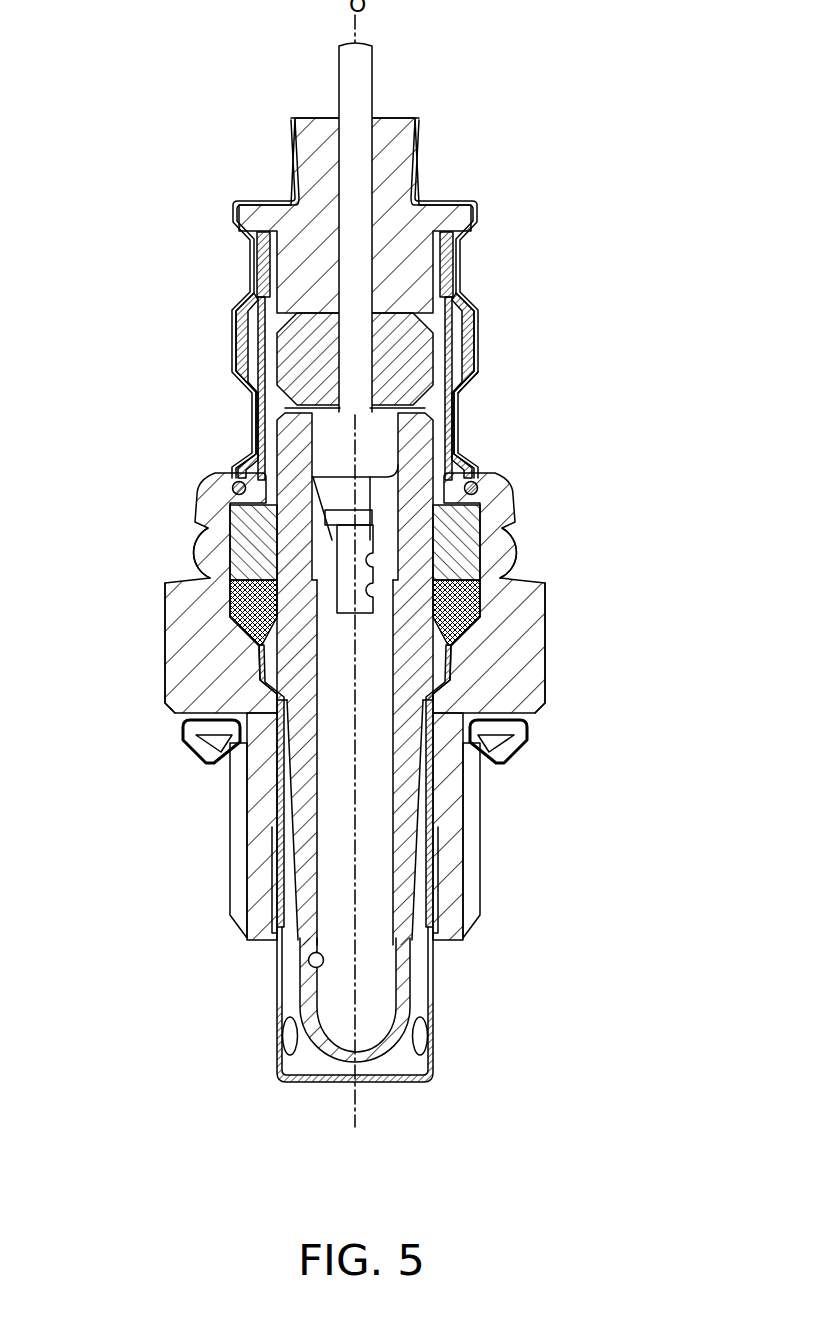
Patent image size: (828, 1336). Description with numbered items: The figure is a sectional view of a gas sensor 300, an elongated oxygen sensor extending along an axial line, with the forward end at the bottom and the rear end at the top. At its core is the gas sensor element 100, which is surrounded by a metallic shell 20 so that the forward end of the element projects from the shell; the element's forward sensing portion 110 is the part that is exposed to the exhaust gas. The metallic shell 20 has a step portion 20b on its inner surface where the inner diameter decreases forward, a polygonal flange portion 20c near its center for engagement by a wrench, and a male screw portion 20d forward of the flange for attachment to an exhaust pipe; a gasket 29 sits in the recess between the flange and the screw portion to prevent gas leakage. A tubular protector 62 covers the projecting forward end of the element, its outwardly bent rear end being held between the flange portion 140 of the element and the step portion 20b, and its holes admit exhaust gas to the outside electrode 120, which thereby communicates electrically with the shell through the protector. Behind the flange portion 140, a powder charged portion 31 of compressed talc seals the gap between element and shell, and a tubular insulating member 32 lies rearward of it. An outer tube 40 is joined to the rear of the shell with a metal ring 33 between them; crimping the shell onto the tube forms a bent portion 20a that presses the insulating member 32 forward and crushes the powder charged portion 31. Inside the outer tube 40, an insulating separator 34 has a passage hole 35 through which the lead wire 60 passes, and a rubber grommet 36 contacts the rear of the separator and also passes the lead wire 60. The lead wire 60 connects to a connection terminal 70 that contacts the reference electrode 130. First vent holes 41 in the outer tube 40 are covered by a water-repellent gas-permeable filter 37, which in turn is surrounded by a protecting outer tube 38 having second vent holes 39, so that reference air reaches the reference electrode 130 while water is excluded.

The gas sensor 300 is at (545, 51).
The lead wire 60 is at (363, 89).
The grommet 36 is at (398, 198).
The passage hole 35 is at (350, 322).
The gas-permeable filter 37 is at (253, 298).
The first vent holes 41 is at (260, 337).
The second vent holes 39 is at (233, 353).
The protecting outer tube 38 is at (477, 313).
The separator 34 is at (418, 348).
The outer tube 40 is at (478, 377).
The connection terminal 70 is at (378, 436).
The gas sensor element 100 is at (425, 455).
The metal ring 33 is at (228, 492).
The insulating member 32 is at (248, 550).
The powder charged portion 31 is at (248, 612).
The flange portion 140 is at (278, 668).
The step portion 20b is at (275, 705).
The bent portion 20a is at (497, 550).
The polygonal flange portion 20c is at (538, 610).
The metallic shell 20 is at (596, 653).
The gasket 29 is at (530, 730).
The outer protector tube 110 is at (410, 810).
The male screw portion 20d is at (482, 836).
The reference electrode 130 is at (316, 964).
The outside electrode 120 is at (405, 1003).
The protector 62 is at (437, 1035).